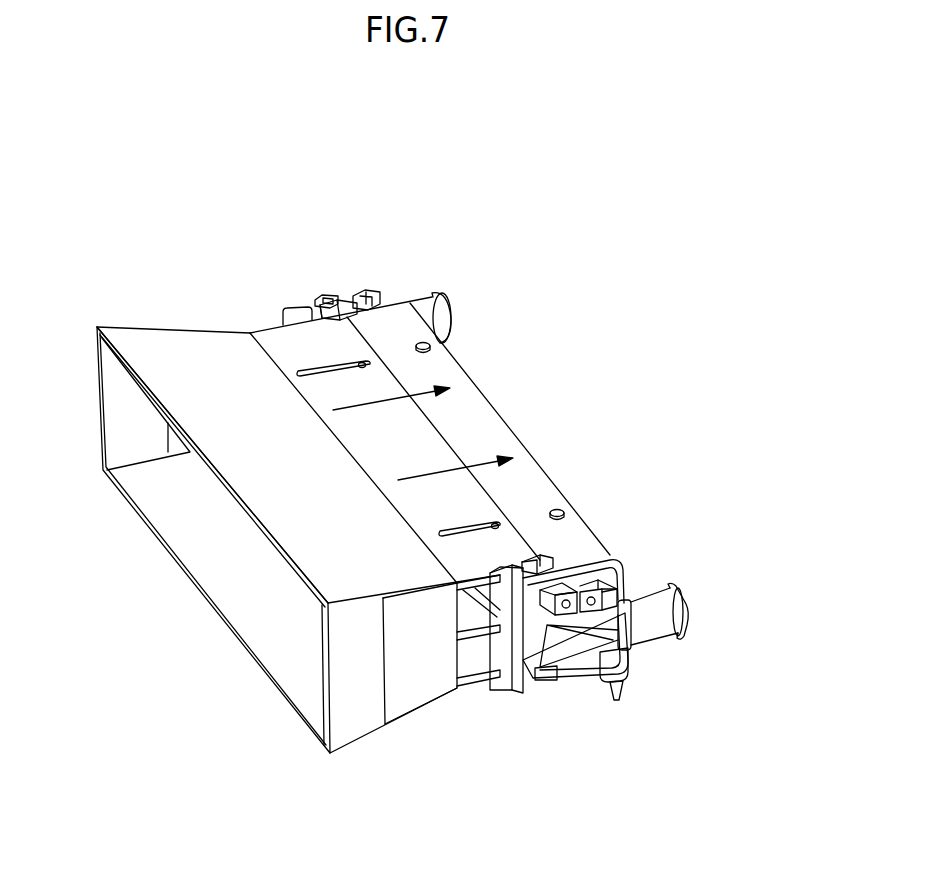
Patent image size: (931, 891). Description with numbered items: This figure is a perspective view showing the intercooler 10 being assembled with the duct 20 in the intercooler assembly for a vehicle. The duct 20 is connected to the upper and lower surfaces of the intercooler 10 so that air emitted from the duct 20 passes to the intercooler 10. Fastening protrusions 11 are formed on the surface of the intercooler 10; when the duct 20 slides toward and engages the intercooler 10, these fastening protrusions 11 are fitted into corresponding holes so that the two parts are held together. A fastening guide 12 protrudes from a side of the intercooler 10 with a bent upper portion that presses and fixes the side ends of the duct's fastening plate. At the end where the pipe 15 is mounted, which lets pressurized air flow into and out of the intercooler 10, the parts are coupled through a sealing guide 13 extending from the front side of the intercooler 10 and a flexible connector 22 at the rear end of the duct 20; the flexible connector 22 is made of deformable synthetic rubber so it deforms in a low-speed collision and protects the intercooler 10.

The intercooler 10 is at (480, 427).
The fastening protrusions 11 is at (428, 342).
The fastening guide 12 is at (338, 310).
The sealing guide 13 is at (512, 673).
The pipe 15 is at (653, 625).
The duct 20 is at (185, 557).
The flexible connector 22 is at (427, 682).